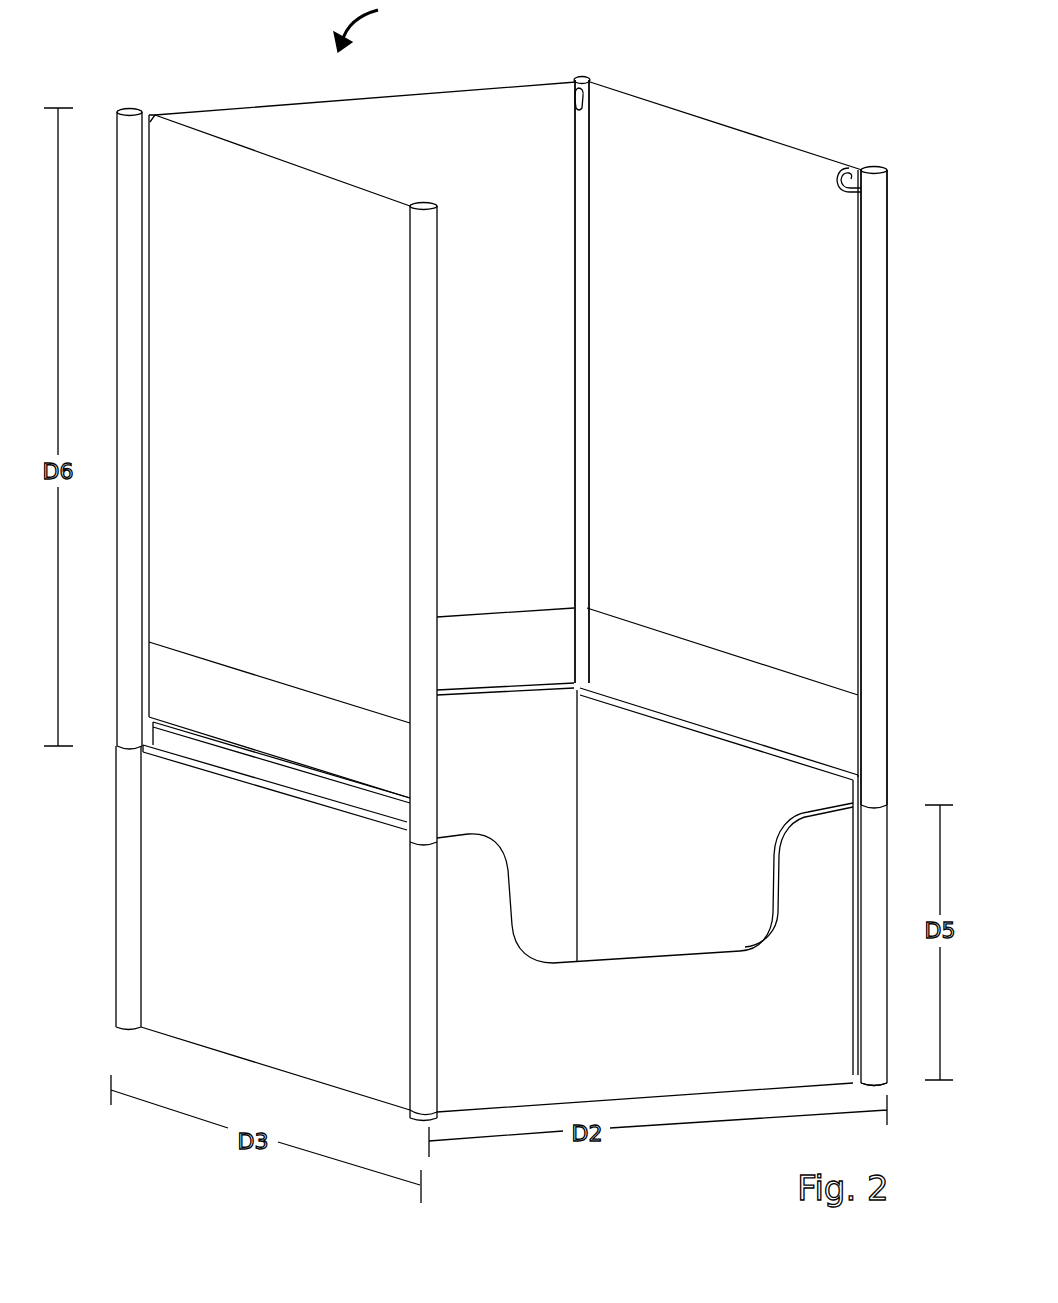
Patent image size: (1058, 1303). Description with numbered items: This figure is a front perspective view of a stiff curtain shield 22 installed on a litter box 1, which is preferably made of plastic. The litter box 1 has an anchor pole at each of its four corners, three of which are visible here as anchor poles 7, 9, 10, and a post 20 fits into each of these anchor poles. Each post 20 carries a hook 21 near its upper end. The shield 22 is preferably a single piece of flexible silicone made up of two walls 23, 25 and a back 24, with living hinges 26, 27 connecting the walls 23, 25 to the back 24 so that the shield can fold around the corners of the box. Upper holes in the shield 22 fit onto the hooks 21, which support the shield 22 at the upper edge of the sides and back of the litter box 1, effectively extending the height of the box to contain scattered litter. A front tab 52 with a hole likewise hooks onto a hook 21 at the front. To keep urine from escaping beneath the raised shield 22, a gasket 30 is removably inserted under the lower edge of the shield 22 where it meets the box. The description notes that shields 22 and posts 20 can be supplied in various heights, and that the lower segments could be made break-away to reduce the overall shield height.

The litter box 1 is at (218, 920).
The anchor pole 7 is at (877, 1062).
The anchor pole 9 is at (123, 800).
The anchor pole 10 is at (418, 1105).
The post 20 is at (130, 560).
The hook 21 is at (576, 95).
The shield 22 is at (370, 27).
The wall 23 is at (178, 418).
The back 24 is at (457, 431).
The wall 25 is at (835, 487).
The living hinge 26 is at (583, 382).
The living hinge 27 is at (157, 114).
The gasket 30 is at (807, 753).
The front tab 52 is at (878, 245).